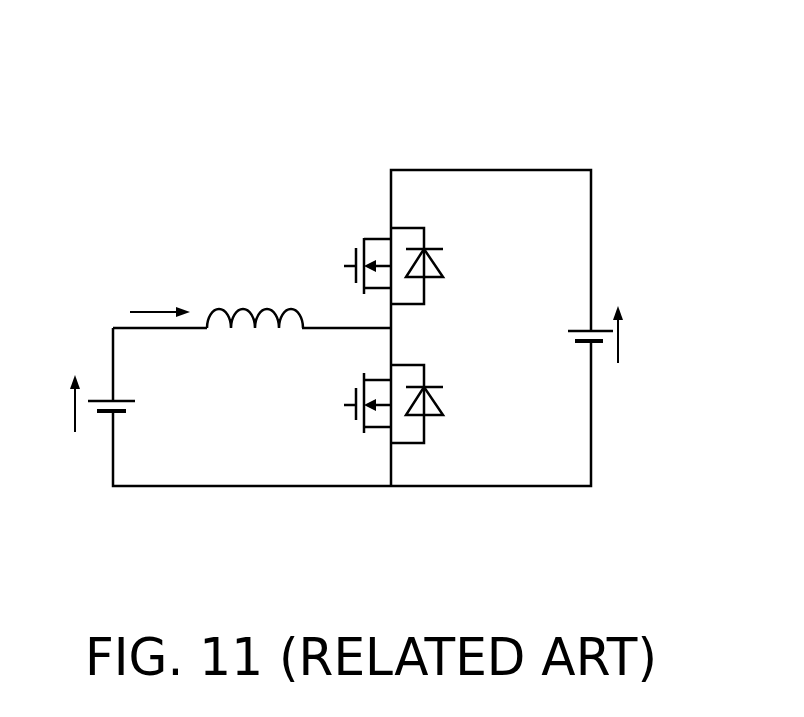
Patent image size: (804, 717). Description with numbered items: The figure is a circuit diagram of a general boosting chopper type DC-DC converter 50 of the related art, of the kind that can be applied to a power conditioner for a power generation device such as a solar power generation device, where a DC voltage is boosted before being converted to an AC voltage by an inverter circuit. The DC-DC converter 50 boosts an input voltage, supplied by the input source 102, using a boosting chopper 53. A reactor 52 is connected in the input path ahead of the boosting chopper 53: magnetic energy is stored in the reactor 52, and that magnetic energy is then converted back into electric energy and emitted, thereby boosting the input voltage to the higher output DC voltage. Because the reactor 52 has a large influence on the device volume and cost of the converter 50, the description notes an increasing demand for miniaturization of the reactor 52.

The boosting chopper type DC-DC converter 50 is at (595, 150).
The reactor 52 is at (247, 307).
The boosting chopper 53 is at (430, 147).
The input power source 102 is at (128, 401).